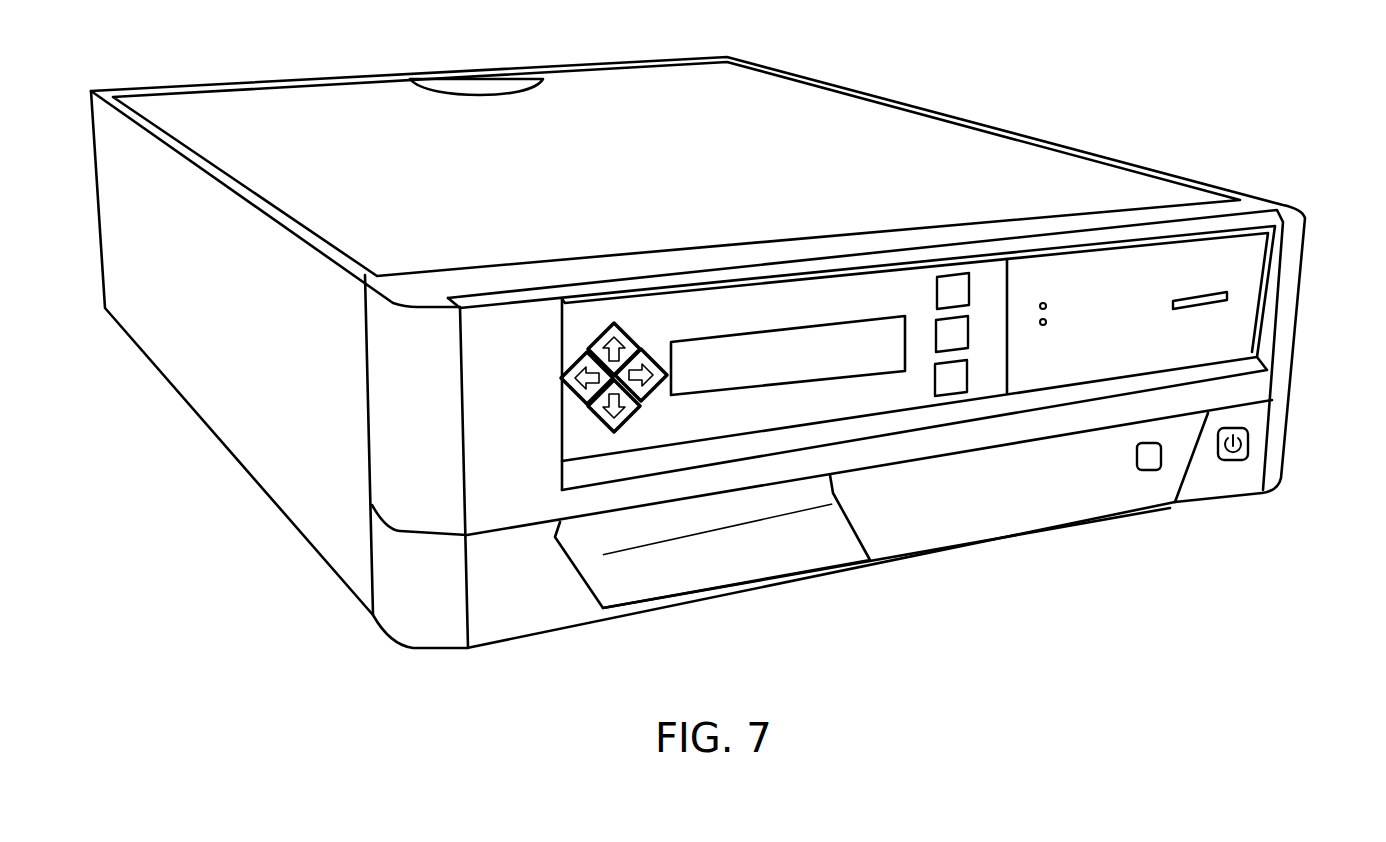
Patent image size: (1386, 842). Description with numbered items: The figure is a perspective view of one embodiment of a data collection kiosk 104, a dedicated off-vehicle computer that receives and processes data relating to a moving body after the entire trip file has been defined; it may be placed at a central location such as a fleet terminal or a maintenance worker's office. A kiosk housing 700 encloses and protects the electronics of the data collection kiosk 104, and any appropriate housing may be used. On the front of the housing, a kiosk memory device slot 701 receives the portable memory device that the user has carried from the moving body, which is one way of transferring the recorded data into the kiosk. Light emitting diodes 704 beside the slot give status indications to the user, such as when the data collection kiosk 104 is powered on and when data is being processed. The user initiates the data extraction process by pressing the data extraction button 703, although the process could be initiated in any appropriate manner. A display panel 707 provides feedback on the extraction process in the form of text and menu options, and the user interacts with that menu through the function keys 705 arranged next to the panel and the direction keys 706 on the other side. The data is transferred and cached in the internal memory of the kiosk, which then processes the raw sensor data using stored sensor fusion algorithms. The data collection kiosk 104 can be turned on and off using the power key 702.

The data collection kiosk 104 is at (1070, 138).
The kiosk housing 700 is at (195, 372).
The kiosk memory device slot 701 is at (1218, 299).
The power key 702 is at (1237, 460).
The data extraction button 703 is at (1151, 458).
The light emitting diodes (LEDs) 704 is at (1050, 330).
The function keys 705 is at (953, 290).
The direction keys 706 is at (583, 397).
The display panel 707 is at (800, 368).